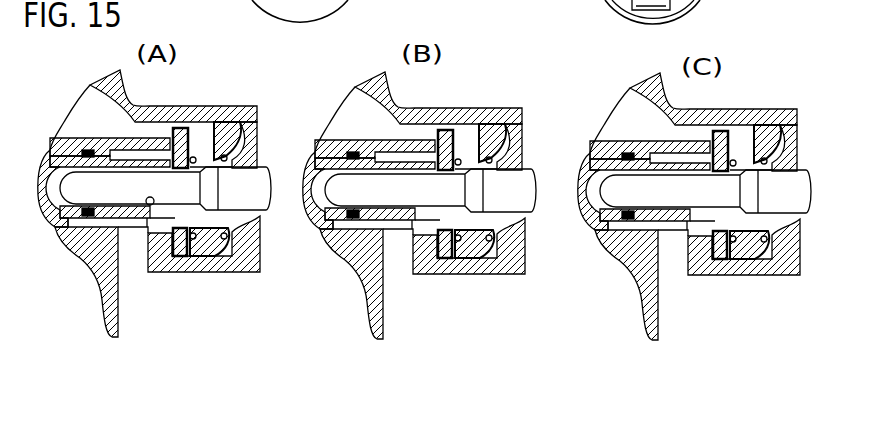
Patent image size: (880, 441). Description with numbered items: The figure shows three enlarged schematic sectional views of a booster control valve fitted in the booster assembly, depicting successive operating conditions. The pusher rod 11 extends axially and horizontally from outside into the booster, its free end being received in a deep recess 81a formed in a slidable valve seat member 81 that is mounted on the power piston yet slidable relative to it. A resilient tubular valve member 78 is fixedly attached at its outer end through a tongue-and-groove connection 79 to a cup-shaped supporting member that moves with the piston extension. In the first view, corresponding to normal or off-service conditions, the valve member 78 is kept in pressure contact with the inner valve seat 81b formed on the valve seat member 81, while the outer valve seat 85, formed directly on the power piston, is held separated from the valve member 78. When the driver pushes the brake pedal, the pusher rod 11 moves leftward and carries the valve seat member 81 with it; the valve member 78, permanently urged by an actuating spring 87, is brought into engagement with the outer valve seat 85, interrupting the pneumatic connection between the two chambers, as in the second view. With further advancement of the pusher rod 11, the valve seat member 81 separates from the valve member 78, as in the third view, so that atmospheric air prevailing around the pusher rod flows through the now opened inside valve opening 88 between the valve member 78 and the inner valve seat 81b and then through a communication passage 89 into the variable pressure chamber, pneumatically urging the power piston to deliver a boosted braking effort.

The pusher rod 11 is at (247, 188).
The slidable valve seat member 81 is at (42, 170).
The deep recess 81a is at (152, 205).
The inner valve seat 81b is at (173, 237).
The outer valve seat 85 is at (167, 127).
The actuating spring 87 is at (242, 152).
The tongue-and-groove connection 79 is at (244, 273).
The communication passage 89 is at (125, 262).
The resilient tubular valve member 78 is at (462, 257).
The inside valve opening 88 is at (706, 236).